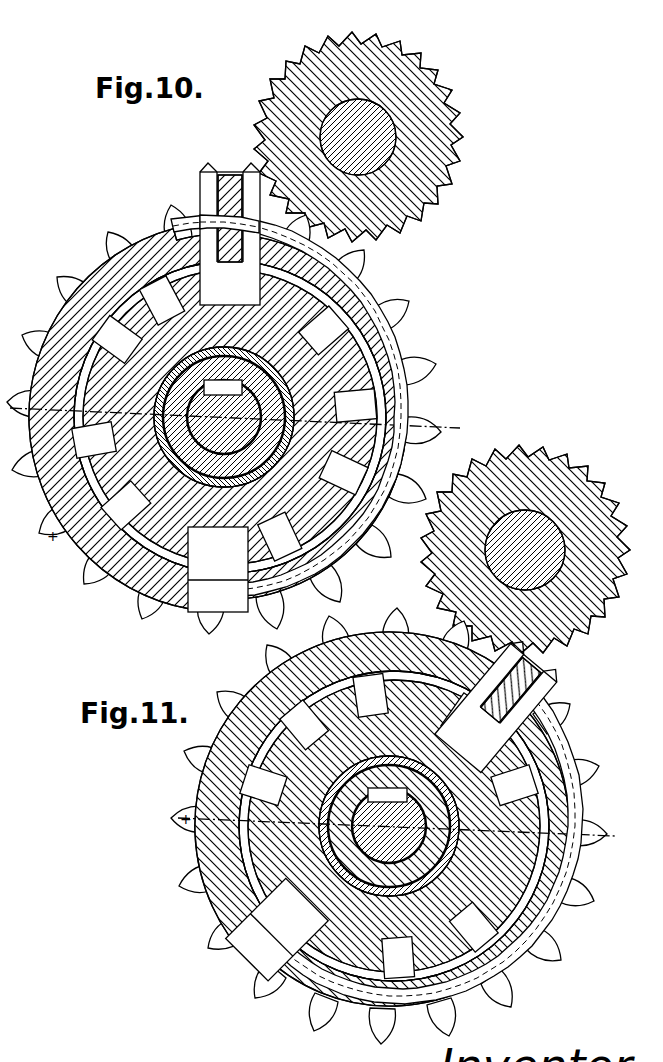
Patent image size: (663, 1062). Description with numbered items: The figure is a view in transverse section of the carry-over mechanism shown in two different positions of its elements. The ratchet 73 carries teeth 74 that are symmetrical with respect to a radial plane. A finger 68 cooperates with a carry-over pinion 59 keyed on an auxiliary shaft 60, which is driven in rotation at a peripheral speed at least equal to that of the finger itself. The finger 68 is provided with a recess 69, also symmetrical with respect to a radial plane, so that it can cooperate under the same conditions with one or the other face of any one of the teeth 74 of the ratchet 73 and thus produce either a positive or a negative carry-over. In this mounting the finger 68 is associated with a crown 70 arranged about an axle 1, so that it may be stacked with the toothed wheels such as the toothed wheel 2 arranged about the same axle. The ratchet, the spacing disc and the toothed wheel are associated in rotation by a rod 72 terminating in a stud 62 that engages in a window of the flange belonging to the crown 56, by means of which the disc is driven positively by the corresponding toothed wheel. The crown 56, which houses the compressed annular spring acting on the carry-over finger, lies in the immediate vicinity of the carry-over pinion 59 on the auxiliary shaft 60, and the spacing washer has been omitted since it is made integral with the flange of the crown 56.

In FIG. 10, the crown 56 is at (224, 417).
In FIG. 11, the crown 56 is at (196, 848).
In FIG. 10, the carry-over pinion 59 is at (440, 166).
In FIG. 11, the carry-over pinion 59 is at (588, 476).
In FIG. 10, the auxiliary shaft 60 is at (294, 78).
In FIG. 11, the auxiliary shaft 60 is at (506, 520).
In FIG. 10, the stud 62 is at (218, 569).
In FIG. 11, the stud 62 is at (277, 929).
In FIG. 10, the finger 68 is at (204, 186).
In FIG. 11, the finger 68 is at (499, 705).
In FIG. 10, the recess 69 is at (242, 246).
In FIG. 11, the recess 69 is at (530, 678).
In FIG. 10, the crown 70 is at (348, 398).
In FIG. 11, the crown 70 is at (258, 783).
In FIG. 10, the rod 72 is at (262, 514).
In FIG. 11, the rod 72 is at (390, 940).
In FIG. 10, the ratchet 73 is at (342, 452).
In FIG. 11, the ratchet 73 is at (474, 927).
In FIG. 10, the teeth 74 is at (360, 352).
In FIG. 11, the teeth 74 is at (272, 702).
In FIG. 10, the axle 1 is at (192, 430).
In FIG. 11, the axle 1 is at (430, 838).
In FIG. 10, the toothed wheel 2 is at (432, 424).
In FIG. 11, the toothed wheel 2 is at (586, 768).